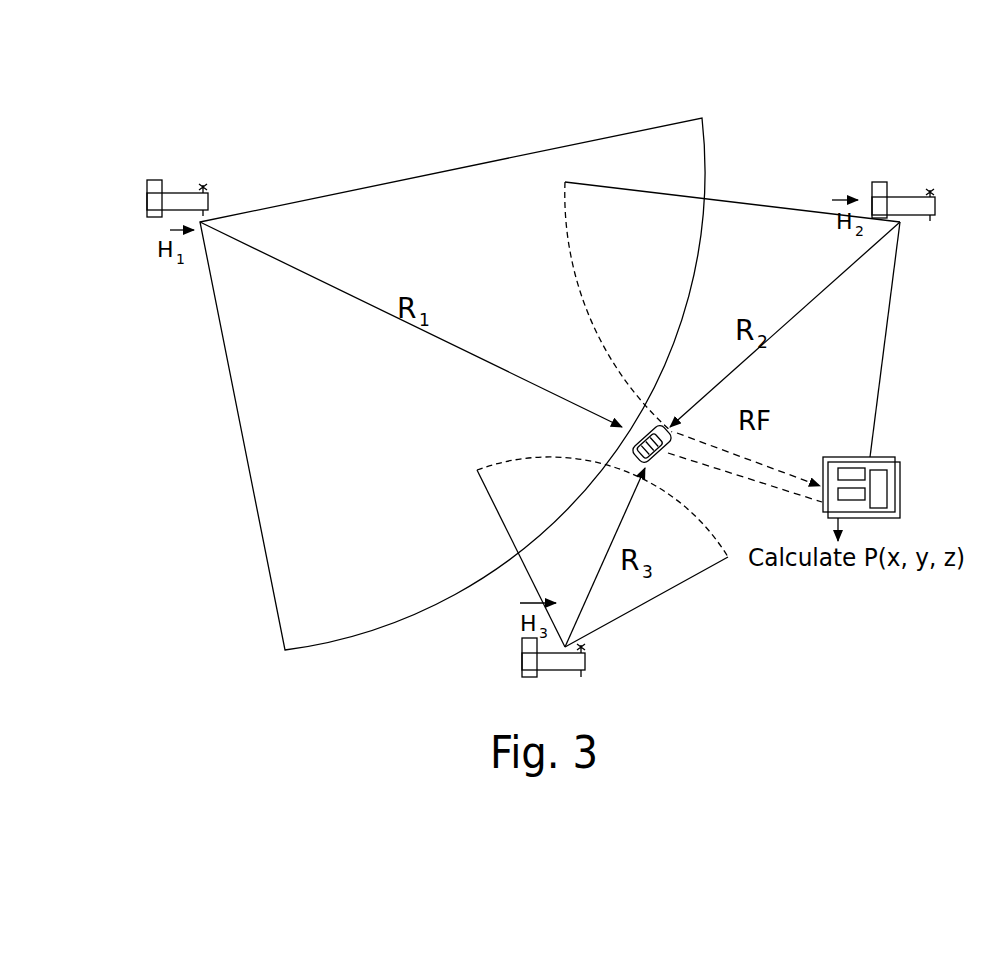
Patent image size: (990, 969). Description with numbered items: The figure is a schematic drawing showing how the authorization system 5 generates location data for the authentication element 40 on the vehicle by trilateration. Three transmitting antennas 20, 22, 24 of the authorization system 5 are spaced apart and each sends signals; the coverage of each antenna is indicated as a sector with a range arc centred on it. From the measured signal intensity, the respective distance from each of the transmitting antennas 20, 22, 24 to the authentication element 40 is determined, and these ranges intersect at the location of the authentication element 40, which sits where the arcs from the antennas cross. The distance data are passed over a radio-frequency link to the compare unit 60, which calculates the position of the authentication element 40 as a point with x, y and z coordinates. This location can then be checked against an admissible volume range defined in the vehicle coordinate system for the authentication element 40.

The authorization system 5 is at (192, 166).
The transmitting antenna 20 is at (147, 203).
The transmitting antenna 22 is at (902, 194).
The transmitting antenna 24 is at (523, 657).
The authentication element 40 is at (645, 464).
The compare unit 60 is at (880, 460).